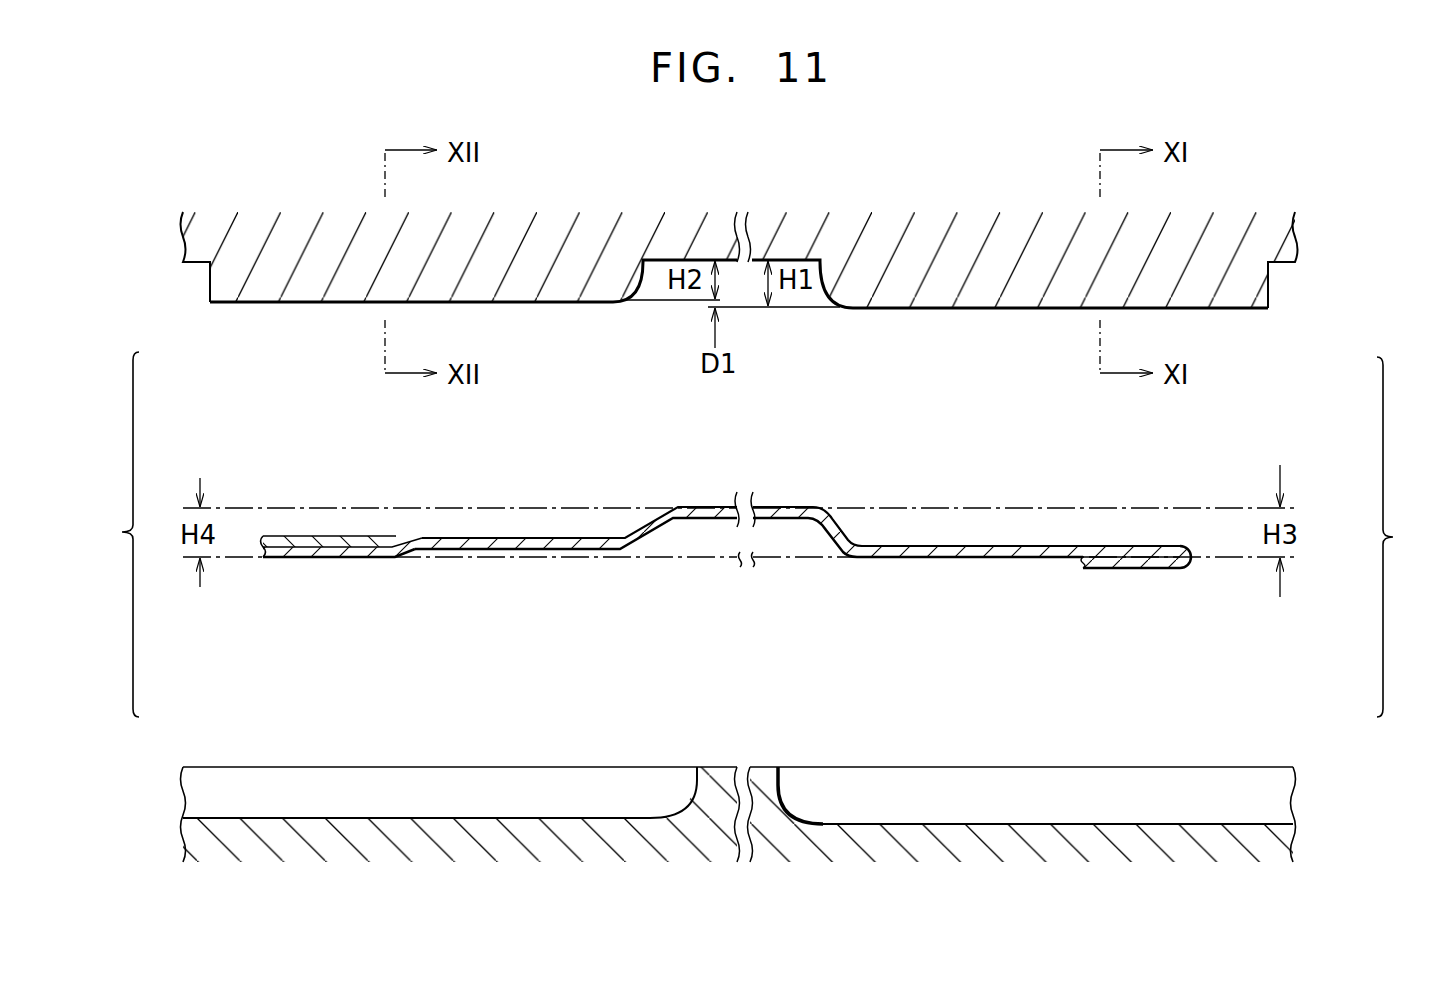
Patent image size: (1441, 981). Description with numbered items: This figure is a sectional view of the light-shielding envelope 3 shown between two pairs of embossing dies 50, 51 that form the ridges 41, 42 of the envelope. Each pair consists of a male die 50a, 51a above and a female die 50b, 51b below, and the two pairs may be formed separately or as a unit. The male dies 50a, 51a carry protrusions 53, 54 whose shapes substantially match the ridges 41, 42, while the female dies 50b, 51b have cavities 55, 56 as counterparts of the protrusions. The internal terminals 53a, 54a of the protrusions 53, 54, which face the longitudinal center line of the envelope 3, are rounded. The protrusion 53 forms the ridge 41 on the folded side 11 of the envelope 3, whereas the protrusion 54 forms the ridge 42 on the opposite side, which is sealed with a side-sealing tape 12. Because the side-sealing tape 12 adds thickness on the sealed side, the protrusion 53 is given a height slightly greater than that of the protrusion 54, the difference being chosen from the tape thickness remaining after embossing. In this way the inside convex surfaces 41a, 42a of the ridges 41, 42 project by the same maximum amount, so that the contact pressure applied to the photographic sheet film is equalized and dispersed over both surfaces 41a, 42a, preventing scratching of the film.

The light-shielding envelope 3 is at (782, 503).
The folded side 11 is at (1180, 570).
The side-sealing tape 12 is at (327, 536).
The ridge 41 is at (1002, 546).
The inside convex surface 41a is at (957, 560).
The ridge 42 is at (482, 551).
The inside convex surface 42a is at (350, 560).
The embossing die 50 is at (1409, 537).
The male die 50a is at (1265, 328).
The female die 50b is at (1270, 753).
The embossing die 51 is at (113, 534).
The male die 51a is at (232, 324).
The female die 51b is at (223, 758).
The protrusion 53 is at (1038, 309).
The internal terminal 53a is at (837, 305).
The protrusion 54 is at (537, 303).
The internal terminal 54a is at (637, 293).
The cavity 55 is at (985, 782).
The cavity 56 is at (397, 782).